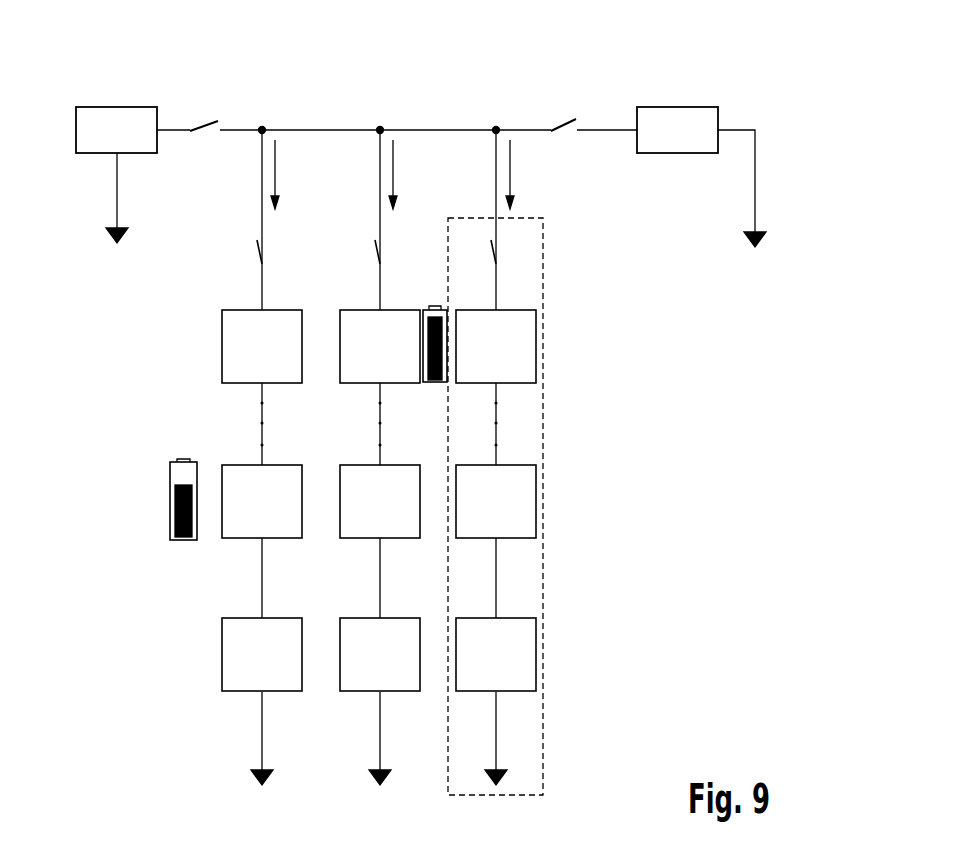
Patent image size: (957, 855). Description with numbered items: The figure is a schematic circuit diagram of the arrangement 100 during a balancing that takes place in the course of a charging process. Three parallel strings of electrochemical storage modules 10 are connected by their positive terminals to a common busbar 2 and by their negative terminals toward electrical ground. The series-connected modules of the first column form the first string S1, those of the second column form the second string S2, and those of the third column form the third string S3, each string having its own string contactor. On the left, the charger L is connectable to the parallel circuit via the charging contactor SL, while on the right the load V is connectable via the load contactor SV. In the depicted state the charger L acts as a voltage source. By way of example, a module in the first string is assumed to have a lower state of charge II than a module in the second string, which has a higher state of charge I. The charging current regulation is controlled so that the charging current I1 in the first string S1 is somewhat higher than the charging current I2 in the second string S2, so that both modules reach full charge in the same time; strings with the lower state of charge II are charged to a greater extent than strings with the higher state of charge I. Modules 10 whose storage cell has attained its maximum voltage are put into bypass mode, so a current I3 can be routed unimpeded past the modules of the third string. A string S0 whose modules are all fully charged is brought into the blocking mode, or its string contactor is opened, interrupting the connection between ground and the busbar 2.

The arrangement 100 is at (133, 75).
The busbar 2 is at (438, 128).
The storage module 10 is at (222, 345).
The charger L is at (116, 175).
The load V is at (701, 177).
The charging contactor SL is at (202, 109).
The load contactor SV is at (562, 109).
The charging current I1 is at (285, 174).
The charging current I2 is at (403, 174).
The current I3 is at (520, 174).
The first string S1 is at (251, 255).
The second string S2 is at (369, 255).
The third string S3 is at (485, 255).
The state of charge I is at (437, 384).
The state of charge II is at (178, 458).
The string S0 is at (544, 735).